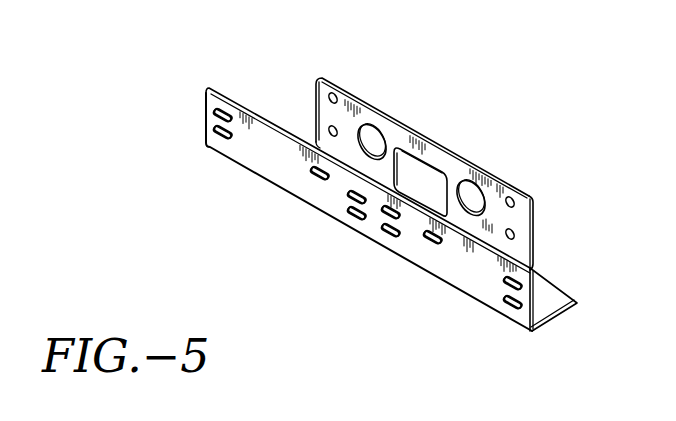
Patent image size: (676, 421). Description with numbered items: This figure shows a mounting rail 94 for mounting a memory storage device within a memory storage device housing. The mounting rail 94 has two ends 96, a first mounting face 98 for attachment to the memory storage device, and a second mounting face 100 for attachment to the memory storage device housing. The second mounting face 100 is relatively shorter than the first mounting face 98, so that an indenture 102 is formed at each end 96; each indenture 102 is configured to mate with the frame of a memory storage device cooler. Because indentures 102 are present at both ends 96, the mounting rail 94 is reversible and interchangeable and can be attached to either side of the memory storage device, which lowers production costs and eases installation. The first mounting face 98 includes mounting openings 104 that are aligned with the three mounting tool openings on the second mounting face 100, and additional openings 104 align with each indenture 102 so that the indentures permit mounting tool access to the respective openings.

The mounting rail 94 is at (418, 145).
The ends 96 is at (536, 279).
The first mounting face 98 is at (463, 276).
The second mounting face 100 is at (340, 78).
The indenture 102 is at (316, 114).
The mounting openings 104 is at (318, 177).